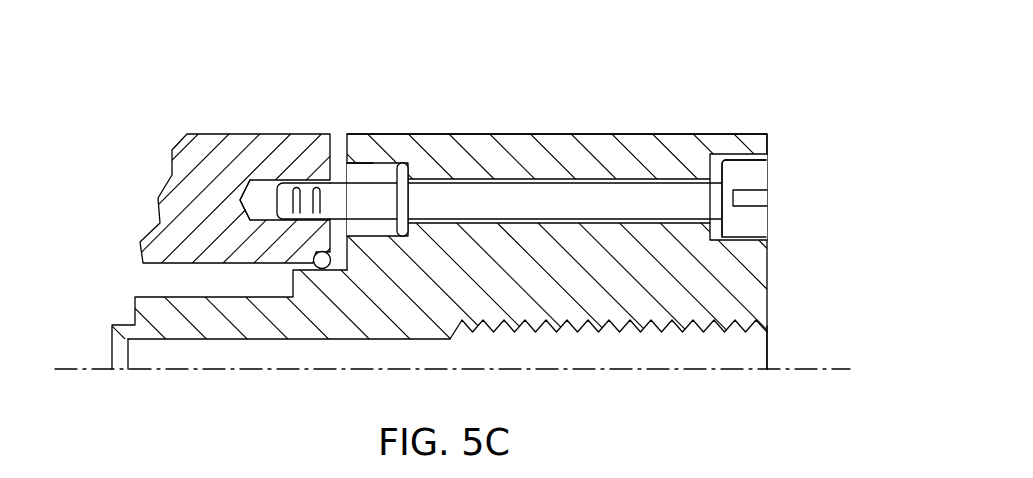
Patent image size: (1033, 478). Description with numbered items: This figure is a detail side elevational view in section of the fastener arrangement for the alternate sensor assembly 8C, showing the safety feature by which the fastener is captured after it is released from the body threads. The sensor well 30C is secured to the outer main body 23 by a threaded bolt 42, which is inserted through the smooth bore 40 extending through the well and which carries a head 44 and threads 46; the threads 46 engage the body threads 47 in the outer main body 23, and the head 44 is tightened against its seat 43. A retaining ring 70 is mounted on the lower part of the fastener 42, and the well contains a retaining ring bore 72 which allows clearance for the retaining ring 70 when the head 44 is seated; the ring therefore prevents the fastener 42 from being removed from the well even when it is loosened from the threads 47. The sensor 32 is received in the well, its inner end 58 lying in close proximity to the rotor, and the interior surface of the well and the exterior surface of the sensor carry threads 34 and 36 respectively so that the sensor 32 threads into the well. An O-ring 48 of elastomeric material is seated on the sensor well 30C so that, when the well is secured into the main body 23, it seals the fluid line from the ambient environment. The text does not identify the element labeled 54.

The sensor assembly 8C is at (540, 130).
The outer main body 23 is at (218, 134).
The threads 46 is at (303, 185).
The threads 47 is at (253, 196).
The retaining ring bore 72 is at (374, 172).
The retaining ring 70 is at (499, 161).
The smooth bore 40 is at (449, 177).
The threaded bolt 42 is at (600, 170).
The seat 43 is at (731, 158).
The head 44 is at (758, 178).
The sensor well 30C is at (469, 253).
The sensor 32 is at (766, 339).
The threads 34 is at (531, 322).
The threads 36 is at (604, 333).
The O-ring 48 is at (320, 269).
The lip 54 is at (112, 350).
The inner end 58 is at (130, 354).